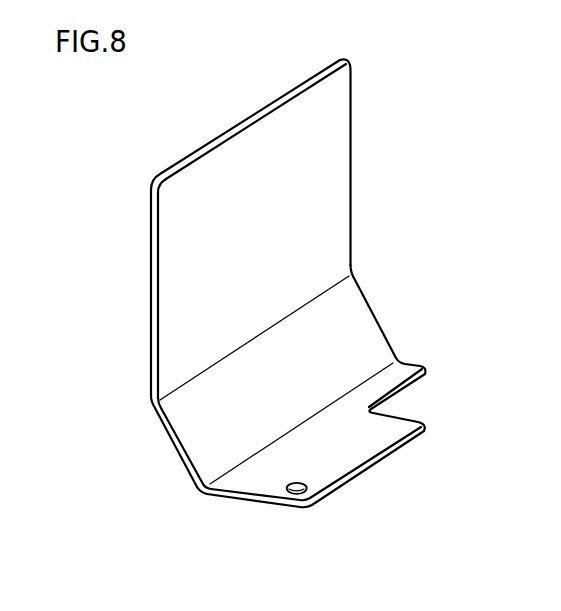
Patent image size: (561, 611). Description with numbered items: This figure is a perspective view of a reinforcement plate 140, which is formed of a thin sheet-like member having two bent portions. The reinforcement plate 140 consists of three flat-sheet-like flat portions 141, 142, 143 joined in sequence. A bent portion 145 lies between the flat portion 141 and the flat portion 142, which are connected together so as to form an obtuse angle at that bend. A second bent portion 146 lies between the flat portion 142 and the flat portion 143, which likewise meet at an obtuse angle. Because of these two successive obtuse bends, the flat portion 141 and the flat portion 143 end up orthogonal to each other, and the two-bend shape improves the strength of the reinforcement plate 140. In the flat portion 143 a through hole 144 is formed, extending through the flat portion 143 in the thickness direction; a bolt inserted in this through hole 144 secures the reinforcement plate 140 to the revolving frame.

The reinforcement plate 140 is at (407, 178).
The flat portion 141 is at (187, 242).
The flat portion 142 is at (217, 417).
The flat portion 143 is at (348, 452).
The through hole 144 is at (303, 476).
The bent portion 145 is at (228, 356).
The bent portion 146 is at (248, 462).